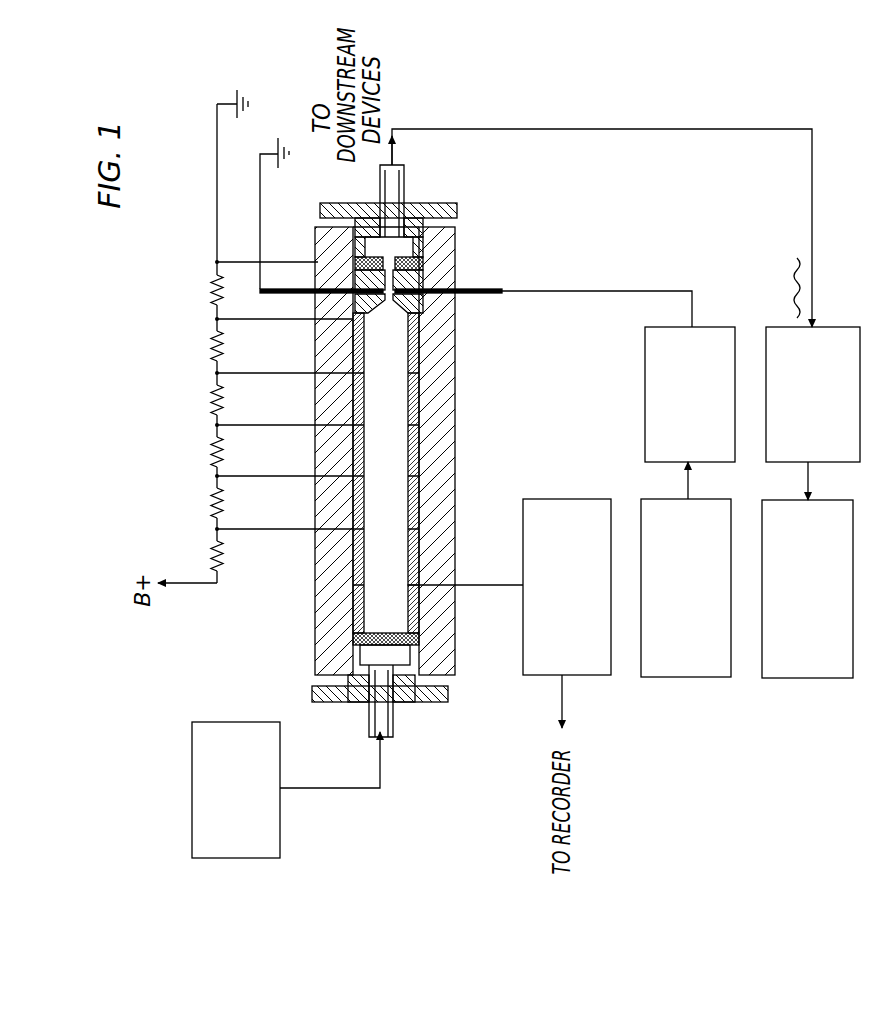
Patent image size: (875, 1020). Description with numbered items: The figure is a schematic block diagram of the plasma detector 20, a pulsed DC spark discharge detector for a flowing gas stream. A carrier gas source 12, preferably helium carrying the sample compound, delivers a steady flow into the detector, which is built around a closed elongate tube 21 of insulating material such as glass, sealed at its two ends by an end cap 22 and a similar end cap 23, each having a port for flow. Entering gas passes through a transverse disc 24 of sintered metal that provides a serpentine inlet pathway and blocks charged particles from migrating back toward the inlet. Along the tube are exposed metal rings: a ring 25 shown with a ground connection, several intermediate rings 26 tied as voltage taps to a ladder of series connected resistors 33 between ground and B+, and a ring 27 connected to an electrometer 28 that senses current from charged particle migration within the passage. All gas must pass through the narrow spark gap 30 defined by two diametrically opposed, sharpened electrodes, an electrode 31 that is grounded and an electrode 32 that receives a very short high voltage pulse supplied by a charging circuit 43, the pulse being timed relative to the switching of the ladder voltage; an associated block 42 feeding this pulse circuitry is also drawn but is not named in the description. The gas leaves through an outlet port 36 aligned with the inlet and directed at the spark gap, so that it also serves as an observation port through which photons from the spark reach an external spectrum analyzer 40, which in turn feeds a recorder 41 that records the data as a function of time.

The carrier gas source 12 is at (192, 800).
The plasma detector 20 is at (473, 467).
The closed elongate tube 21 is at (352, 608).
The end cap 22 is at (312, 694).
The end cap 23 is at (334, 203).
The transverse disc 24 is at (400, 630).
The ring 25 is at (412, 251).
The intermediate rings 26 is at (419, 470).
The ring 27 is at (419, 567).
The electrometer 28 is at (549, 499).
The spark gap 30 is at (388, 302).
The electrode 31 is at (296, 288).
The electrode 32 is at (482, 289).
The series connected resistors 33 is at (213, 500).
The outlet port 36 is at (405, 178).
The spectrum analyzer 40 is at (840, 327).
The recorder 41 is at (805, 678).
The charging circuit 42 is at (680, 677).
The charging circuit 43 is at (718, 327).